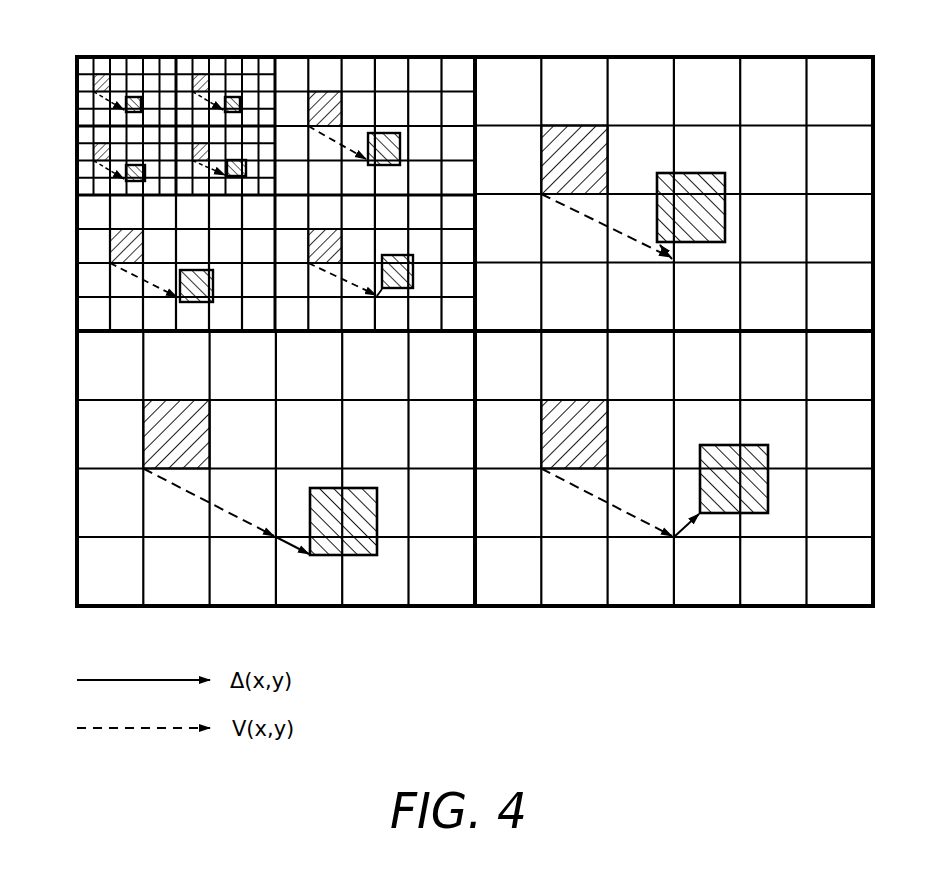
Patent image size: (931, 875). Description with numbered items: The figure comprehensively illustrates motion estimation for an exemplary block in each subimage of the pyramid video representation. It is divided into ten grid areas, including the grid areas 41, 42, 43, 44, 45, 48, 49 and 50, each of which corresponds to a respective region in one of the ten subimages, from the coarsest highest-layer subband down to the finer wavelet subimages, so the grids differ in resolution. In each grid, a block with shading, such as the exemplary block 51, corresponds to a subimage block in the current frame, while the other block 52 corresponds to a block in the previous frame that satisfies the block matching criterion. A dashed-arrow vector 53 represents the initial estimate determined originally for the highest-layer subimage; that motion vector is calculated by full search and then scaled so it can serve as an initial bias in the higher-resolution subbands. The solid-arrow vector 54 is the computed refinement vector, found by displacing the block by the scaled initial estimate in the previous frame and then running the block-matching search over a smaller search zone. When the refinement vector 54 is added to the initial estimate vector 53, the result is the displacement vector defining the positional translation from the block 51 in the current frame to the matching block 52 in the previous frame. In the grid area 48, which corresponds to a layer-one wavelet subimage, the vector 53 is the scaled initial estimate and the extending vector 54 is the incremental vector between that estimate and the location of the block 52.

The grid area 41 is at (117, 69).
The grid area 42 is at (86, 172).
The grid area 43 is at (250, 135).
The grid area 44 is at (203, 69).
The grid area 45 is at (239, 222).
The grid area 48 is at (276, 468).
The grid area 49 is at (785, 368).
The grid area 50 is at (784, 97).
The shaded block 51 is at (167, 418).
The matching block 52 is at (355, 495).
The dashed-arrow vector 53 is at (194, 501).
The solid-arrow vector 54 is at (300, 556).